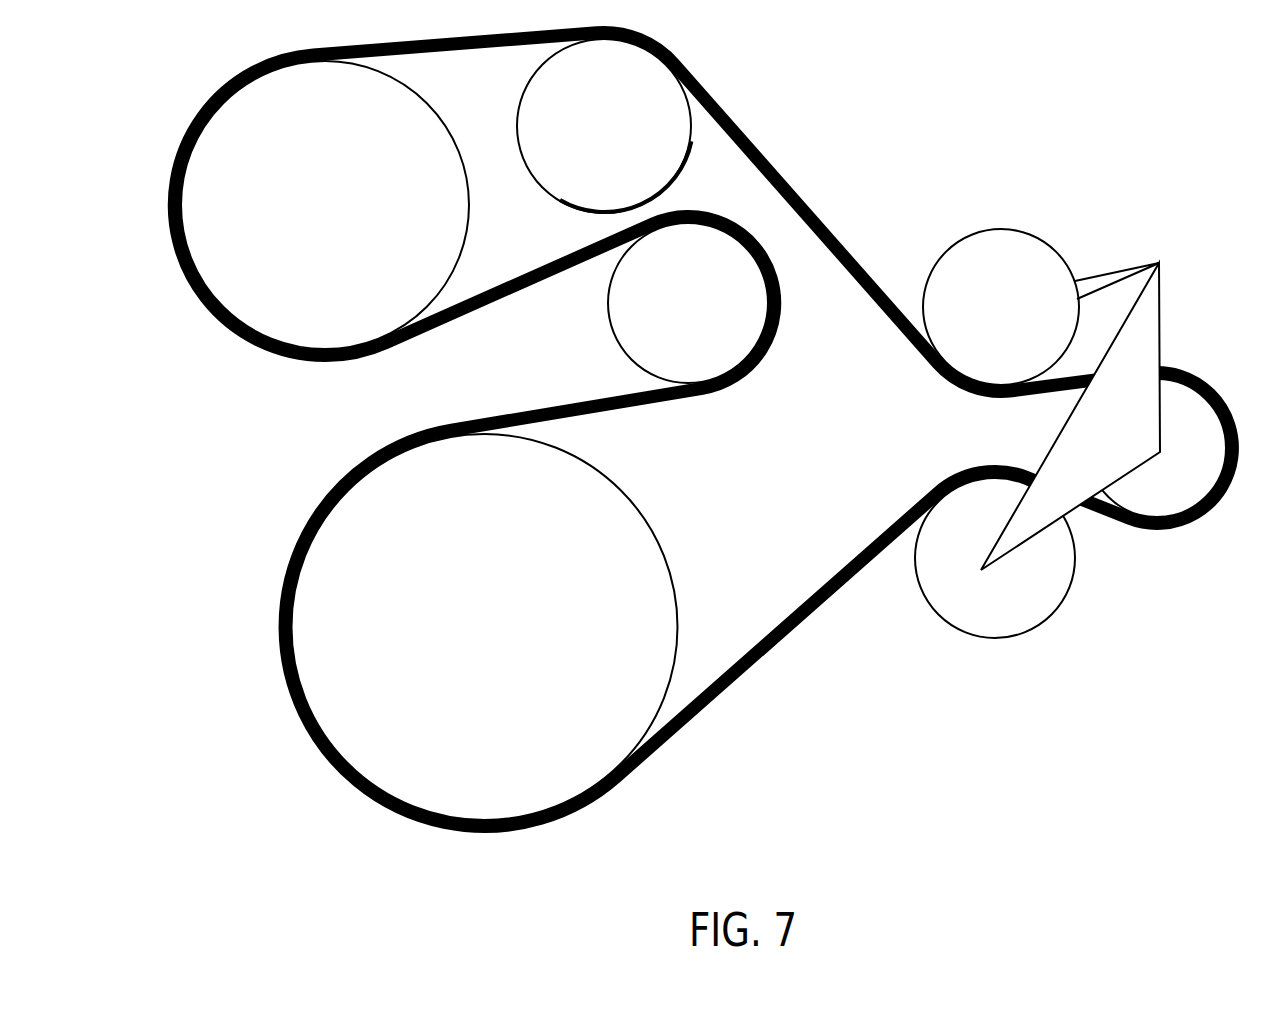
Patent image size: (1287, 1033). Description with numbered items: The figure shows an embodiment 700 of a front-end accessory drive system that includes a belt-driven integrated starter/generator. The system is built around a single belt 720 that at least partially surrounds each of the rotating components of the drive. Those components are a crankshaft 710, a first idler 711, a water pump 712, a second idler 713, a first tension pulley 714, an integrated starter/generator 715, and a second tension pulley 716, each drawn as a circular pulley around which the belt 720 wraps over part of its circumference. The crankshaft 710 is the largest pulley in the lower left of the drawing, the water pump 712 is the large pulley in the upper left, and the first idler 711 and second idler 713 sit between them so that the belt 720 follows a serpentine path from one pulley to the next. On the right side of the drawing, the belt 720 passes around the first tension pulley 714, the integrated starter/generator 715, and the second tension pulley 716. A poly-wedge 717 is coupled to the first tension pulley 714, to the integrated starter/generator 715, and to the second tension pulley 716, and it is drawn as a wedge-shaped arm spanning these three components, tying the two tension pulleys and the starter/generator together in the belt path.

The FEAD system embodiment 700 is at (1147, 68).
The crankshaft 710 is at (506, 627).
The first idler 711 is at (709, 311).
The water pump 712 is at (342, 219).
The second idler 713 is at (627, 137).
The first tension pulley 714 is at (1017, 321).
The integrated starter/generator 715 is at (1185, 497).
The second tension pulley 716 is at (1016, 614).
The poly-wedge 717 is at (1138, 441).
The belt 720 is at (794, 190).